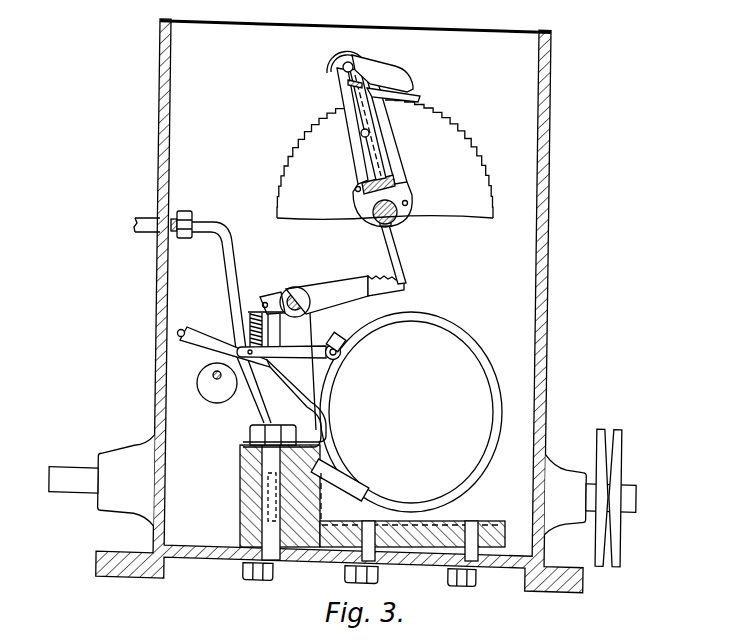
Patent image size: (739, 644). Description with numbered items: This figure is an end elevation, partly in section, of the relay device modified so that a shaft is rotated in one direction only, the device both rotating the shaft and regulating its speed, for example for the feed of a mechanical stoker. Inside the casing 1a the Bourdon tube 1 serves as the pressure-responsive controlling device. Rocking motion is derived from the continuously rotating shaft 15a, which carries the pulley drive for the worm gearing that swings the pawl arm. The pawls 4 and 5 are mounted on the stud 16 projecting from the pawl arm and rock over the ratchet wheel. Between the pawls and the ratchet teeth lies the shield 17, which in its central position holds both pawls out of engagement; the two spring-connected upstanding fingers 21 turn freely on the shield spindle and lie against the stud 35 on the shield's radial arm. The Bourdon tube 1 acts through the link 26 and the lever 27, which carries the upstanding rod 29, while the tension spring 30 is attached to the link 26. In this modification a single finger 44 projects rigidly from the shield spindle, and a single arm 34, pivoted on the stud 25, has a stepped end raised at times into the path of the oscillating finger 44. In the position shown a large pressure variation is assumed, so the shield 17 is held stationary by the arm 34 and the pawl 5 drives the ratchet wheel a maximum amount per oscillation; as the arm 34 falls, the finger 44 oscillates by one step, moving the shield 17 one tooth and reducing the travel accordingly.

The Bourdon tube 1 is at (478, 352).
The casing 1a is at (550, 343).
The pawl 4 is at (477, 184).
The pawl 5 is at (398, 78).
The continuously rotating shaft 15a is at (638, 493).
The stud 16 is at (354, 51).
The shield 17 is at (421, 97).
The upstanding fingers 21 is at (383, 142).
The stud 25 is at (300, 292).
The link 26 is at (305, 356).
The lever 27 is at (185, 328).
The upstanding rod 29 is at (272, 333).
The tension spring 30 is at (256, 325).
The arm 34 is at (388, 291).
The stud 35 is at (361, 136).
The finger 44 is at (404, 249).